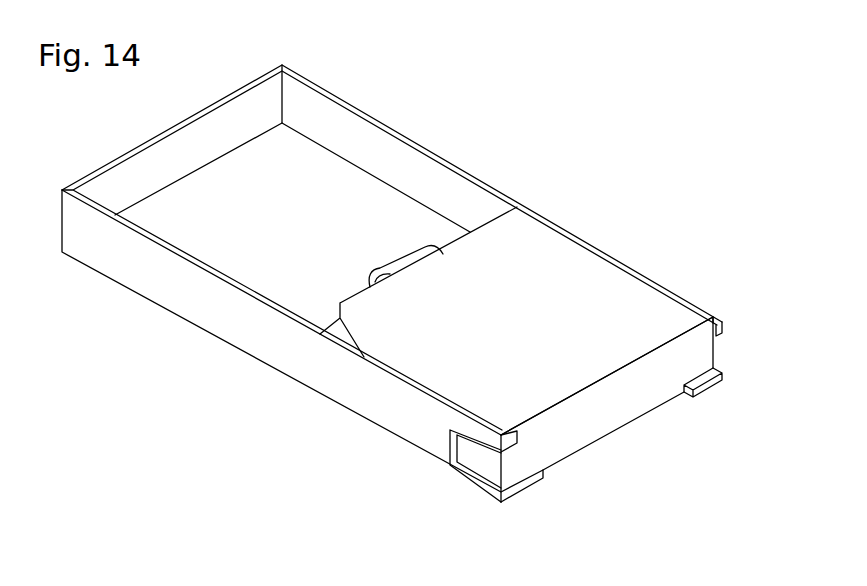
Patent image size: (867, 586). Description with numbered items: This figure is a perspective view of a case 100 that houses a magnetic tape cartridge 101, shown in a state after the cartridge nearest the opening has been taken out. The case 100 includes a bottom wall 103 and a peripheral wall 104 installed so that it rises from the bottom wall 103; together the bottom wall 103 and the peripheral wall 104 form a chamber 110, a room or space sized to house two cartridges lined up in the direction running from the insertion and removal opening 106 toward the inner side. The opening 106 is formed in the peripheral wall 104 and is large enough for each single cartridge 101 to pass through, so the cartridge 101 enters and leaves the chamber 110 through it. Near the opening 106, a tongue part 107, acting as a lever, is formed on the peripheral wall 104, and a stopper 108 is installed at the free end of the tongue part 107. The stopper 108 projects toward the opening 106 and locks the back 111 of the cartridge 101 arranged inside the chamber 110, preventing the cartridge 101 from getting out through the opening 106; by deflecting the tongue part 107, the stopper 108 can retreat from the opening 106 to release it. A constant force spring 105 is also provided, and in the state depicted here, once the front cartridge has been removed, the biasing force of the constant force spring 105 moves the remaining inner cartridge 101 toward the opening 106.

The case 100 is at (424, 172).
The magnetic tape cartridge 101 is at (578, 262).
The bottom wall 103 is at (233, 250).
The peripheral wall 104 is at (123, 265).
The constant force spring 105 is at (398, 265).
The opening 106 is at (643, 390).
The tongue part 107 is at (477, 436).
The stopper 108 is at (511, 440).
The chamber 110 is at (312, 170).
The back 111 is at (594, 424).